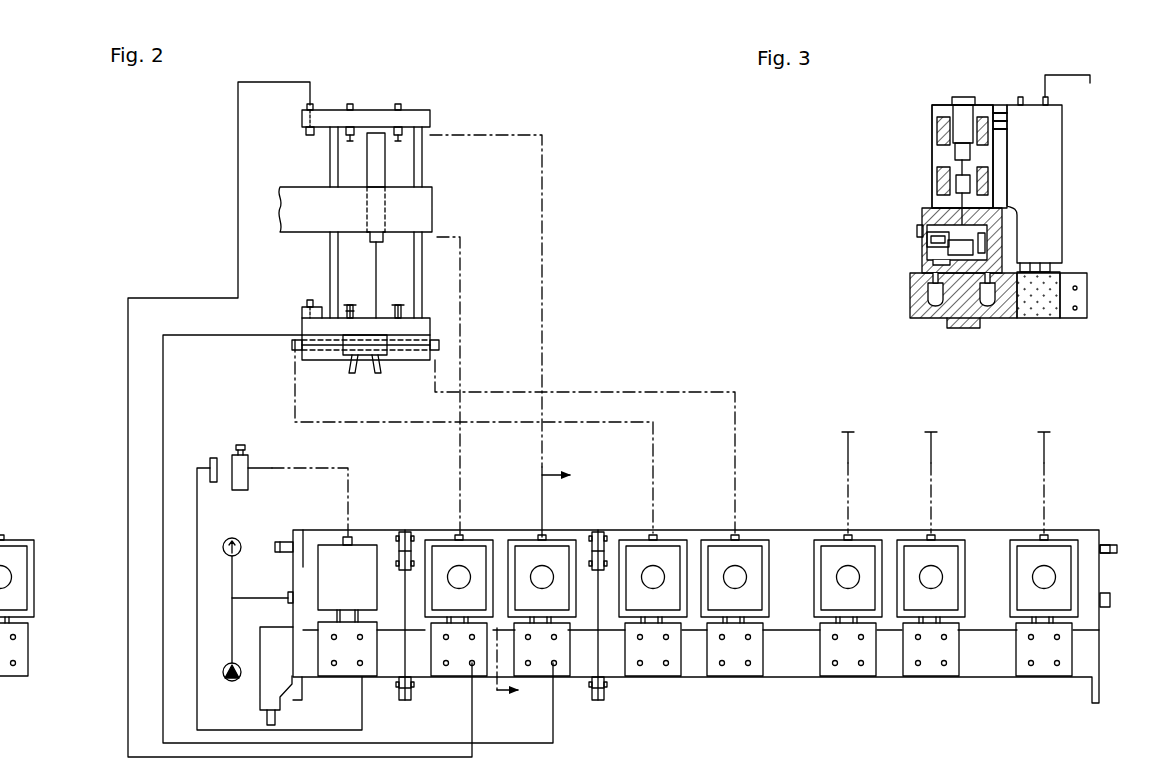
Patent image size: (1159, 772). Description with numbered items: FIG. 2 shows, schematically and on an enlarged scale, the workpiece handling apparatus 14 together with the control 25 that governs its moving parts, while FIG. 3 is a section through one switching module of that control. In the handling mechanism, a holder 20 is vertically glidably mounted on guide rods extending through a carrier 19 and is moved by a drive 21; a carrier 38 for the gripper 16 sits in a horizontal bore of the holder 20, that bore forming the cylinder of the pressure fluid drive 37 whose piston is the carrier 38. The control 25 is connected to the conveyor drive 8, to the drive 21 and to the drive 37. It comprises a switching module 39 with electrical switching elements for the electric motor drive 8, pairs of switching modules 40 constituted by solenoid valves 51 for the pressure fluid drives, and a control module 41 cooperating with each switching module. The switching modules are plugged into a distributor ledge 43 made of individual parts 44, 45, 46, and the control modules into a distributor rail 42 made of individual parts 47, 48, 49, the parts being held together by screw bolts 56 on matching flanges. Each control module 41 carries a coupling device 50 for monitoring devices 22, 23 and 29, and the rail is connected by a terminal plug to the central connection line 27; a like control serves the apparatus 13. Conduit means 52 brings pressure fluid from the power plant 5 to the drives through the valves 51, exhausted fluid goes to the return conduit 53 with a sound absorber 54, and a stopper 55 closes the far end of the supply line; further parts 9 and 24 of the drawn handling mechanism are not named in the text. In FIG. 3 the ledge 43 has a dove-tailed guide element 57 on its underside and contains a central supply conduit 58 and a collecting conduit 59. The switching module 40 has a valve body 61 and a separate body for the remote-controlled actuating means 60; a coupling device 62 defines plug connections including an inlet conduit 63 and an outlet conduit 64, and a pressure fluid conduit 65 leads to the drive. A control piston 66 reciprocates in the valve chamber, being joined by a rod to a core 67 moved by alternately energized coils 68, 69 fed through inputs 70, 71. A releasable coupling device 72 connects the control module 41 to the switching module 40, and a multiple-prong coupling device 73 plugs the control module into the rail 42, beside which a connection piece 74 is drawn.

In FIG. 2, the power plant 5 is at (224, 665).
In FIG. 2, the drive for the conveyor 8 is at (241, 490).
In FIG. 2, the valve adjusting screw 9 is at (243, 446).
In FIG. 2, the apparatus 13 is at (355, 86).
In FIG. 2, the workpiece handling apparatus 14 is at (447, 155).
In FIG. 2, the gripper 16 is at (356, 362).
In FIG. 2, the carrier 19 is at (425, 217).
In FIG. 2, the holder 20 is at (418, 330).
In FIG. 2, the drive for vertical adjustment 21 is at (382, 150).
In FIG. 2, the monitoring device 22 is at (306, 129).
In FIG. 2, the monitoring device 23 is at (310, 300).
In FIG. 2, the tie bolts 24 is at (355, 104).
In FIG. 2, the control 25 is at (762, 438).
In FIG. 2, the central connection line 27 is at (267, 716).
In FIG. 2, the monitoring device 29 is at (211, 462).
In FIG. 2, the drive for horizontal adjustment 37 is at (440, 345).
In FIG. 2, the carrier 38 is at (378, 360).
In FIG. 2, the switching module 39 is at (331, 558).
In FIG. 2, the switching module 40 is at (443, 556).
In FIG. 3, the switching module 40 is at (920, 104).
In FIG. 2, the control module 41 is at (349, 680).
In FIG. 3, the control module 41 is at (1068, 143).
In FIG. 2, the distributor rail 42 is at (780, 655).
In FIG. 3, the distributor rail 42 is at (1040, 302).
In FIG. 2, the distributor ledge 43 is at (790, 555).
In FIG. 3, the distributor ledge 43 is at (915, 296).
In FIG. 2, the individual part of distributor ledge 44 is at (385, 546).
In FIG. 2, the individual part of distributor ledge 45 is at (581, 543).
In FIG. 2, the individual part of distributor ledge 46 is at (985, 553).
In FIG. 2, the individual part of distributor rail 47 is at (398, 700).
In FIG. 2, the individual part of distributor rail 48 is at (423, 660).
In FIG. 2, the individual part of distributor rail 49 is at (588, 690).
In FIG. 2, the coupling device 50 is at (333, 666).
In FIG. 3, the coupling device 50 is at (1021, 97).
In FIG. 2, the solenoid valve 51 is at (478, 557).
In FIG. 2, the conduit means 52 is at (265, 597).
In FIG. 2, the return conduit 53 is at (286, 541).
In FIG. 2, the sound absorber 54 is at (240, 545).
In FIG. 2, the stopper 55 is at (1110, 600).
In FIG. 2, the screw bolts 56 is at (411, 532).
In FIG. 3, the screw bolts 56 is at (1078, 291).
In FIG. 3, the dove-tailed guide element 57 is at (966, 322).
In FIG. 3, the central supply conduit 58 is at (987, 303).
In FIG. 3, the collecting conduit 59 is at (935, 303).
In FIG. 3, the remote-controlled actuating means 60 is at (955, 116).
In FIG. 3, the valve body 61 is at (910, 210).
In FIG. 3, the coupling device 62 is at (975, 248).
In FIG. 3, the inlet conduit 63 is at (985, 255).
In FIG. 3, the outlet conduit 64 is at (928, 266).
In FIG. 3, the pressure fluid conduit 65 is at (918, 228).
In FIG. 3, the control piston 66 is at (945, 246).
In FIG. 3, the core 67 is at (955, 152).
In FIG. 3, the coil 68 is at (940, 130).
In FIG. 3, the coil 69 is at (958, 180).
In FIG. 3, the input 70 is at (1000, 130).
In FIG. 3, the input 71 is at (999, 108).
In FIG. 3, the releasable coupling device 72 is at (1002, 104).
In FIG. 3, the releasable coupling device 73 is at (1066, 272).
In FIG. 3, the connection piece 74 is at (1046, 276).